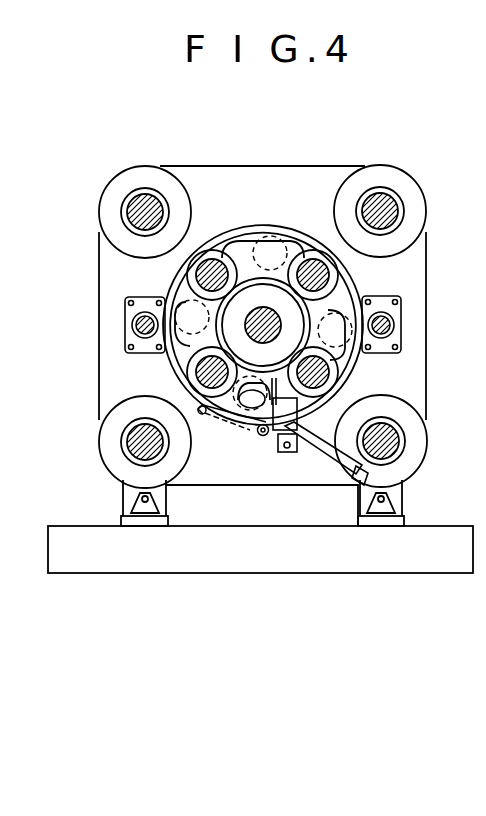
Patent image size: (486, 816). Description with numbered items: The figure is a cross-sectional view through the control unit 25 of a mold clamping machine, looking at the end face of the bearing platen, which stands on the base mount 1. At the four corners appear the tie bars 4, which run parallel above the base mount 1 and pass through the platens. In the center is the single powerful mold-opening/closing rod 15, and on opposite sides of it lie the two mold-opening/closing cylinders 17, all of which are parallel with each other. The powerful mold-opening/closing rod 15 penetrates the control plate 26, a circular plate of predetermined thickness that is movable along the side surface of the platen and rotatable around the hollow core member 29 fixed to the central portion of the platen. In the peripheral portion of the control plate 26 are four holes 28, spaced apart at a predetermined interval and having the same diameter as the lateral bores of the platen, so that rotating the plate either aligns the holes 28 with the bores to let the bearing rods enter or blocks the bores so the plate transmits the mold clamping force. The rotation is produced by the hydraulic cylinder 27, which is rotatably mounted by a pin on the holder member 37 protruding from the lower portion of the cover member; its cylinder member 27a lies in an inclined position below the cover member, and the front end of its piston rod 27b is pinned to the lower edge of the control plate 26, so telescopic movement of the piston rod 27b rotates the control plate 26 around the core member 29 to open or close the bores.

The base mount 1 is at (300, 560).
The tie bars 4 is at (136, 208).
The powerful mold-opening/closing rod 15 is at (275, 325).
The mold-opening/closing cylinders 17 is at (130, 310).
The control unit 25 is at (232, 230).
The control plate 26 is at (248, 243).
The hydraulic cylinder 27 is at (303, 460).
The cylinder member 27a is at (346, 466).
The piston rod 27b is at (268, 440).
The holes 28 is at (283, 243).
The hollow core member 29 is at (233, 334).
The holder member 37 is at (266, 436).